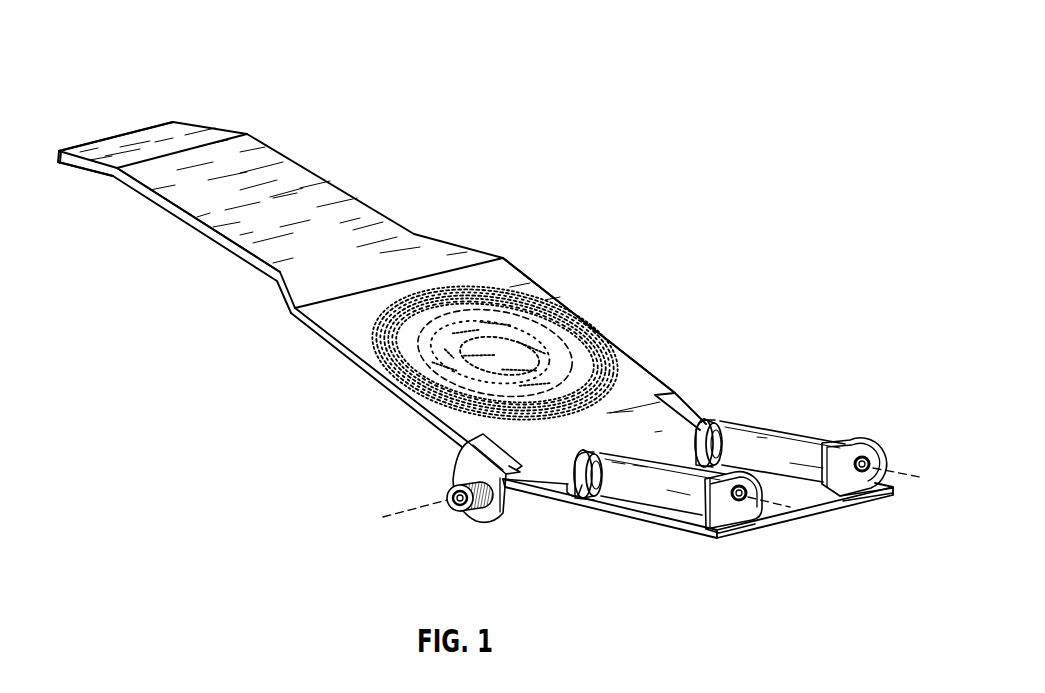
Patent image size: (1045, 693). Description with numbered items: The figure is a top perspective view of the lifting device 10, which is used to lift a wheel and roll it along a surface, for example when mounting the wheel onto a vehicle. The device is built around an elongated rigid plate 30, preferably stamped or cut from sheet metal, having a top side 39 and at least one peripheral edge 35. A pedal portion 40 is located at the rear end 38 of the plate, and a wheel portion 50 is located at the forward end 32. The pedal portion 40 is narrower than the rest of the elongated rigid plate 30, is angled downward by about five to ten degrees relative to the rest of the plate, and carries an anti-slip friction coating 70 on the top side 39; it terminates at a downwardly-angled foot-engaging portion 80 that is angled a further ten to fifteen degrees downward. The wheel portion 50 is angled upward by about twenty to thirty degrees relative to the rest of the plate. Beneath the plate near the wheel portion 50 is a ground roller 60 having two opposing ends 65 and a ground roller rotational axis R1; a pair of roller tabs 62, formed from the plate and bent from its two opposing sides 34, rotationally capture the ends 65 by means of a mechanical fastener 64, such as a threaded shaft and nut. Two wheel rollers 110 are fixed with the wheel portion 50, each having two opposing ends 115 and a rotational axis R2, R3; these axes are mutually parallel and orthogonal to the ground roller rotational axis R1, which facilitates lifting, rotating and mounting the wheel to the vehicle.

The lifting device 10 is at (752, 35).
The elongated rigid plate 30 is at (333, 342).
The forward end 32 is at (790, 512).
The opposing sides 34 is at (575, 313).
The peripheral edge 35 is at (207, 233).
The rear end 38 is at (118, 135).
The top side 39 is at (348, 271).
The pedal portion 40 is at (313, 192).
The wheel portion 50 is at (723, 458).
The ground roller 60 is at (523, 513).
The roller tabs 62 is at (458, 458).
The mechanical fastener 64 is at (453, 494).
The opposing ends 65 is at (497, 524).
The anti-slip friction coating 70 is at (180, 128).
The lip 80 is at (110, 173).
The wheel rollers 110 is at (655, 475).
The opposing ends 115 is at (692, 513).
The ground roller rotational axis R1 is at (403, 514).
The rotational axis R2 is at (783, 510).
The roller axis R3 is at (923, 487).